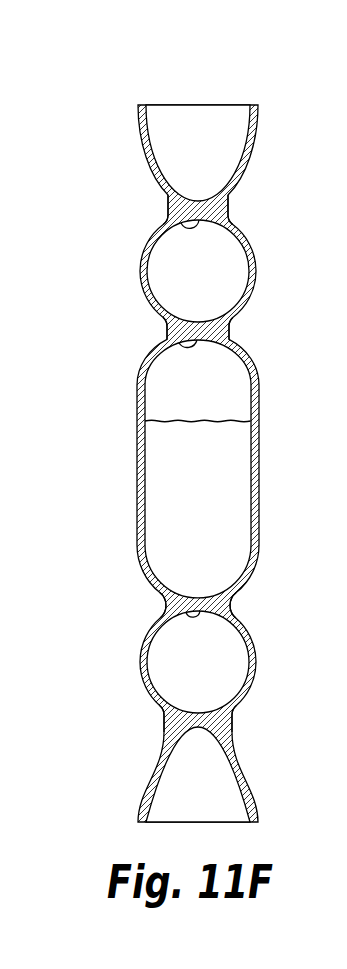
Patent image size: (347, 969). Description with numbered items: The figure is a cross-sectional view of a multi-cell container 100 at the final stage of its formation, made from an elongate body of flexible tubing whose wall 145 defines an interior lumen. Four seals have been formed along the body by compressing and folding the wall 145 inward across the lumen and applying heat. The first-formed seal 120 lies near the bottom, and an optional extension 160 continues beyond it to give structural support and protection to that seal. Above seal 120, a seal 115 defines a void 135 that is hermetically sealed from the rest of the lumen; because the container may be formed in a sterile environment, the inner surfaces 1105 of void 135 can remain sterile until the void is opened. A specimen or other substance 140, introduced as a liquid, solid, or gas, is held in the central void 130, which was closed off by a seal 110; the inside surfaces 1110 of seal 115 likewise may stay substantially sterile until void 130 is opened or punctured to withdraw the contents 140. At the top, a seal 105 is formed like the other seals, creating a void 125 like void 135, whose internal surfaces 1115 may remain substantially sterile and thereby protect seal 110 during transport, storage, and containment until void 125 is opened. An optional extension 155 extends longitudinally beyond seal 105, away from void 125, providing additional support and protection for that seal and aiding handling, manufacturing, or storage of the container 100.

The container 100 is at (112, 139).
The seal 105 is at (245, 207).
The seal 110 is at (158, 336).
The seal 115 is at (160, 606).
The seal 120 is at (242, 723).
The void 125 is at (228, 257).
The void 130 is at (203, 372).
The void 135 is at (230, 648).
The substance 140 is at (205, 460).
The wall 145 is at (155, 172).
The extension 155 is at (175, 118).
The extension 160 is at (217, 813).
The inner surfaces 1105 is at (198, 612).
The inside surfaces 1110 is at (197, 339).
The internal surfaces 1115 is at (198, 222).